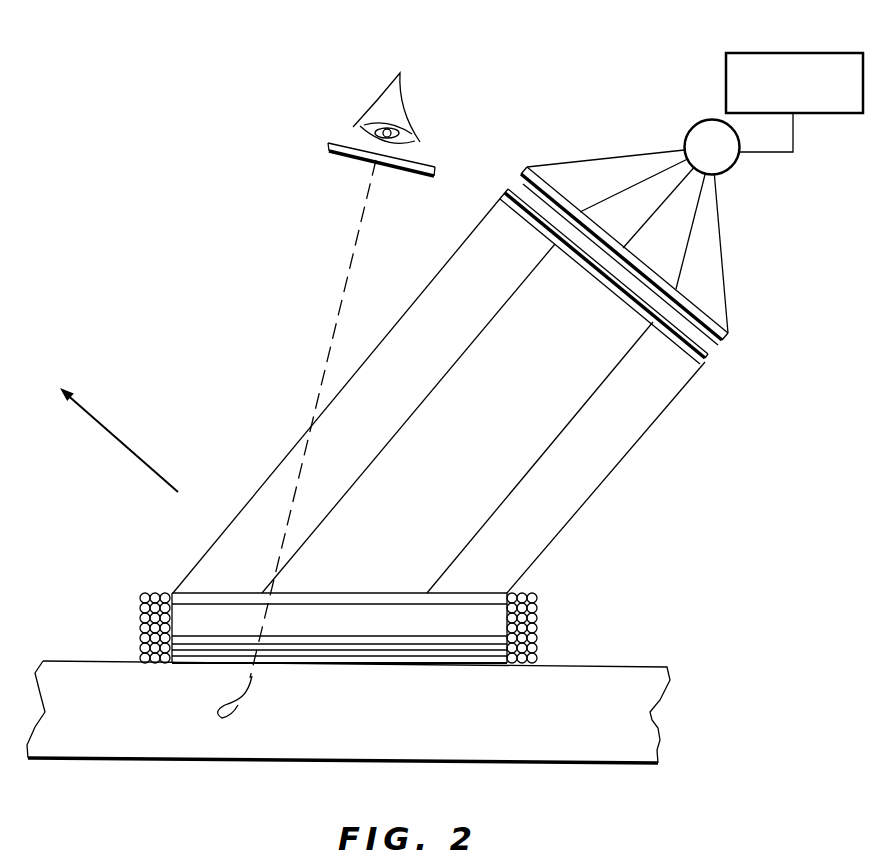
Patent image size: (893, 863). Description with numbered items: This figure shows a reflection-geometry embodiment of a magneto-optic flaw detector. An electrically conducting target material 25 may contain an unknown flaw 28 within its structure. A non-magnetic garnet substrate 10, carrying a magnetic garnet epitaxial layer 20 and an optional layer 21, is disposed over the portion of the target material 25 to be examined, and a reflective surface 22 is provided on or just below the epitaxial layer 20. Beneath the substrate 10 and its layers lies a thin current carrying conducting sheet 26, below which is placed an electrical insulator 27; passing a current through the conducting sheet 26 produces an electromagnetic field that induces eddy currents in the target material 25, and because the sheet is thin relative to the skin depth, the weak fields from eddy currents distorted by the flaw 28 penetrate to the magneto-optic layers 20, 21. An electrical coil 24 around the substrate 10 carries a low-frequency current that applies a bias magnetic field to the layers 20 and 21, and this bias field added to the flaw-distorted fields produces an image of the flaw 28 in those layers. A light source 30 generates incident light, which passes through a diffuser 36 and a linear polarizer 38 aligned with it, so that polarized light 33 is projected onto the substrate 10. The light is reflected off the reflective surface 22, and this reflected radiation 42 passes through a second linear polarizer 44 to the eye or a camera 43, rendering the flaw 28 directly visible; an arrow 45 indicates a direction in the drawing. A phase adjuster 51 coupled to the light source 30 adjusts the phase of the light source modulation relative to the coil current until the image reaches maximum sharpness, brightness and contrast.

The substrate 10 is at (339, 623).
The epitaxial layer 20 is at (528, 611).
The optional layer 21 is at (485, 600).
The reflective surface 22 is at (512, 638).
The electrical coil 24 is at (140, 617).
The target material 25 is at (505, 753).
The current carrying conducting sheet 26 is at (537, 662).
The electrical insulator 27 is at (463, 667).
The flaw 28 is at (240, 703).
The light source 30 is at (626, 190).
The polarized light 33 is at (439, 391).
The diffuser 36 is at (674, 352).
The linear polarizer 38 is at (640, 334).
The reflected radiation 42 is at (343, 282).
The eye or camera 43 is at (393, 112).
The second linear polarizer 44 is at (337, 152).
The magnetic field direction arrow 45 is at (116, 432).
The phase adjuster 51 is at (782, 54).